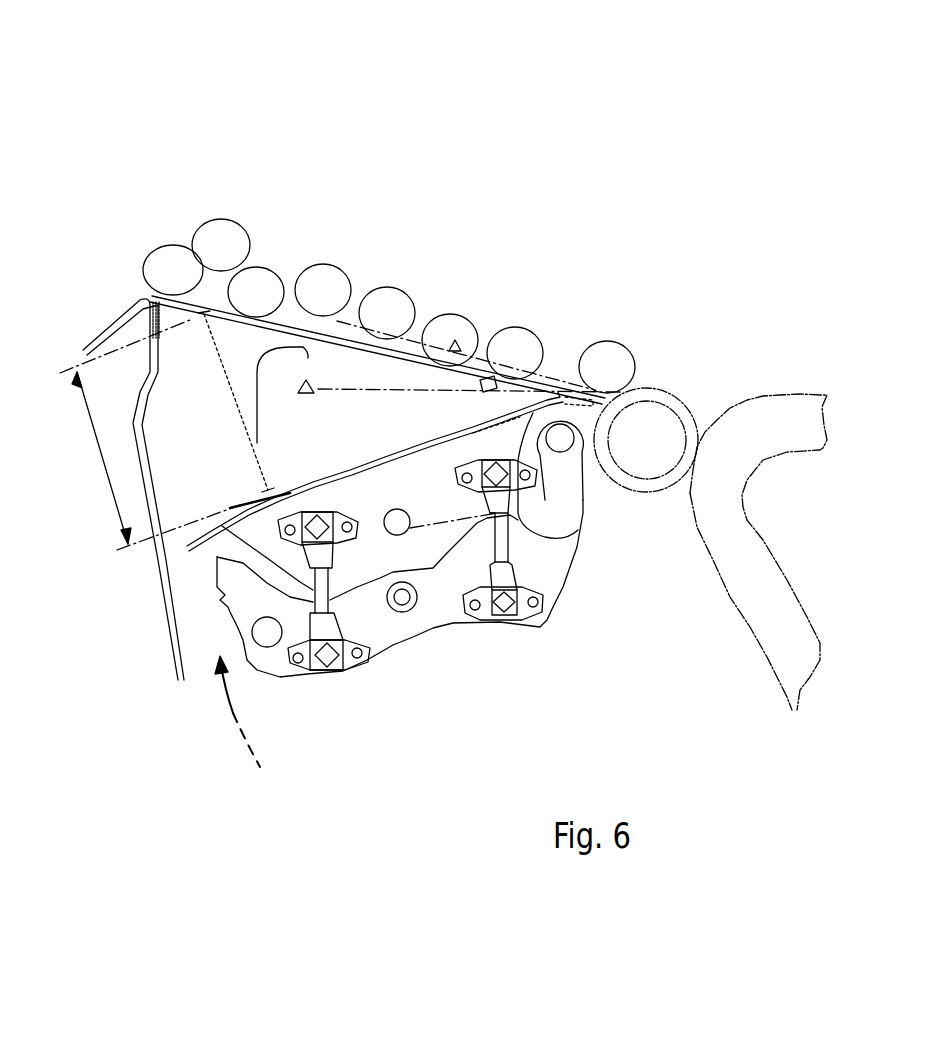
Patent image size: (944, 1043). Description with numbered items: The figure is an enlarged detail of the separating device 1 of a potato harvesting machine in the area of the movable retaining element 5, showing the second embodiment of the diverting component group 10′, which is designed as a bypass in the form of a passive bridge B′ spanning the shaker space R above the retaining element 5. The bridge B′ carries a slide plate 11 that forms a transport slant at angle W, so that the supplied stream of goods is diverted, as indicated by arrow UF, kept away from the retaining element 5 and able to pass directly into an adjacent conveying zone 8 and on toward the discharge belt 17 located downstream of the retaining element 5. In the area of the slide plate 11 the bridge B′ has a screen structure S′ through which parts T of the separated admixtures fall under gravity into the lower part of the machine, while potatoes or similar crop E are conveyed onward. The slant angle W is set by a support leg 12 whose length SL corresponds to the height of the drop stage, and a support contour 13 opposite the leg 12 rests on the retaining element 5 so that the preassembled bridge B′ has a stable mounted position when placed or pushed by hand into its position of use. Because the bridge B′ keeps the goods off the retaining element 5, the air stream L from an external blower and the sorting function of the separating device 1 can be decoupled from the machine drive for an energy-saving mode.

The separating device 1 is at (198, 785).
The retaining element 5 is at (420, 455).
The conveying zone 8 is at (823, 342).
The diverting component group 10′ is at (533, 264).
The slide plate 11 is at (467, 393).
The support leg 12 is at (233, 392).
The support contour 13 is at (543, 400).
The discharge belt 17 is at (751, 656).
The crop E is at (262, 283).
The slant angle W is at (367, 427).
The diverting action arrow UF is at (472, 254).
The screen structure S′ is at (407, 357).
The parts of separated goods T is at (306, 394).
The shaker space R is at (233, 454).
The length of support leg SL is at (98, 493).
The bridge B′ is at (439, 384).
The air stream L is at (266, 787).